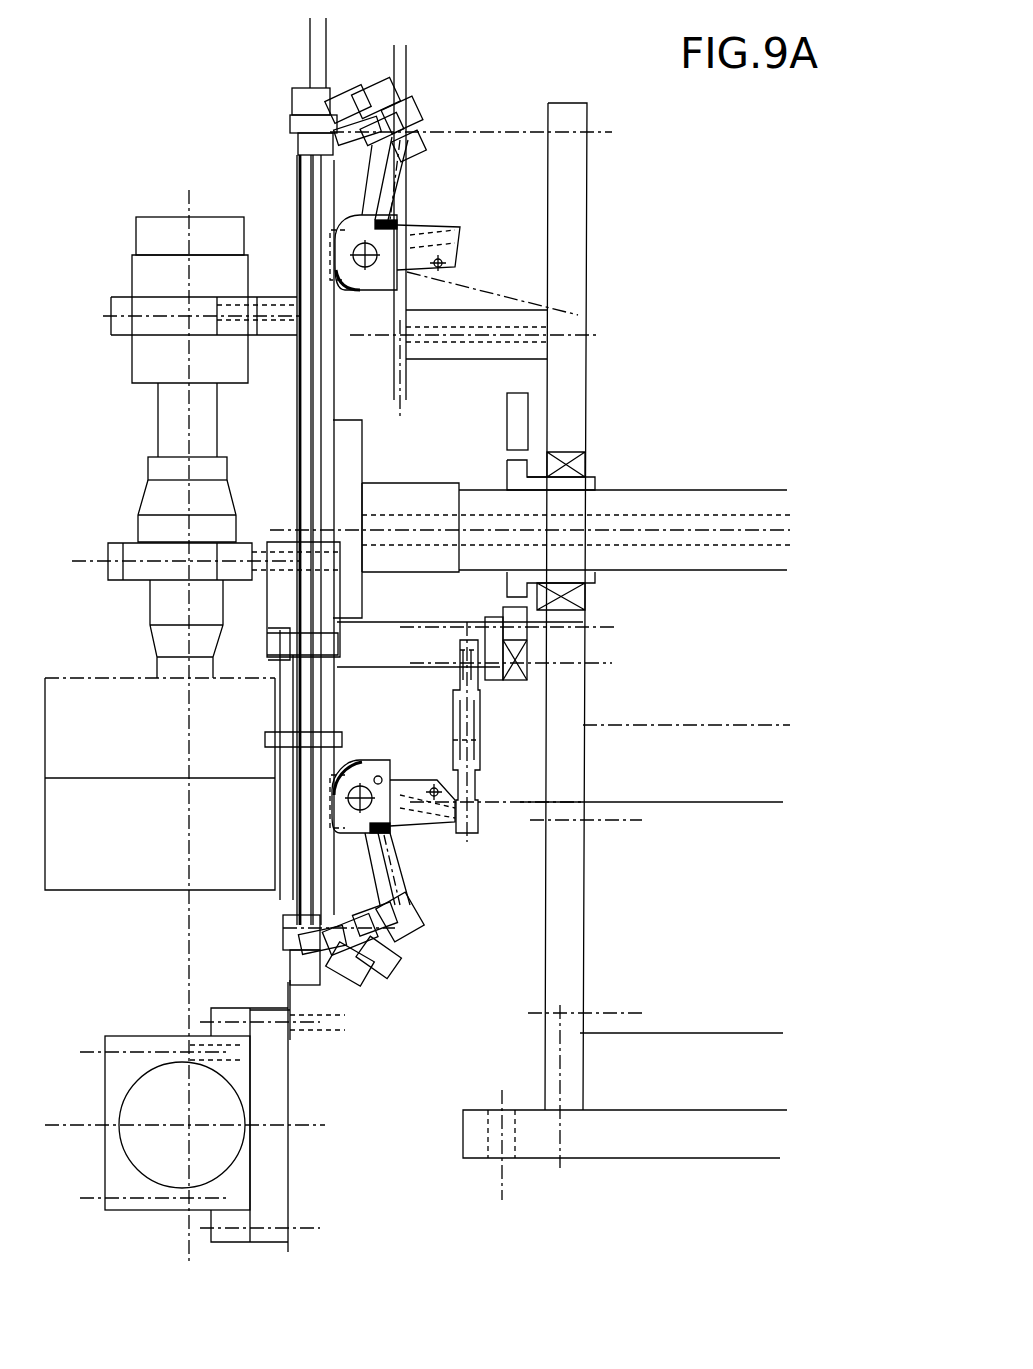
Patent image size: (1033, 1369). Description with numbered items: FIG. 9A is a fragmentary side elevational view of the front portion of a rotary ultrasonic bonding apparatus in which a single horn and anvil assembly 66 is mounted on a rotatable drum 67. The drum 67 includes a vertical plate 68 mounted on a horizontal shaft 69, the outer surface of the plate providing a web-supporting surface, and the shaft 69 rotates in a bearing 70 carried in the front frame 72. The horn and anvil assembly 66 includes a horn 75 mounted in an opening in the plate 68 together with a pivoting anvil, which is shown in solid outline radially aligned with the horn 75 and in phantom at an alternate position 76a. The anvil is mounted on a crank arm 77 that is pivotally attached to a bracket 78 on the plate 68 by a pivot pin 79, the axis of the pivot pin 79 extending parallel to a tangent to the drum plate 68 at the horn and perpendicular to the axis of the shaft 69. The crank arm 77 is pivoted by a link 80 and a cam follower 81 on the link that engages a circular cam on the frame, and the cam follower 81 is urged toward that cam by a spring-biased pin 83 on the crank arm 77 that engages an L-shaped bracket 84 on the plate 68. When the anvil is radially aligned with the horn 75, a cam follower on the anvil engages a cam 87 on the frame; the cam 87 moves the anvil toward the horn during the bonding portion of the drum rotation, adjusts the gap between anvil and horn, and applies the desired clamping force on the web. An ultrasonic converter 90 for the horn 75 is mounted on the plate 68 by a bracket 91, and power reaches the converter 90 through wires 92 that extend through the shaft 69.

The horn and anvil assembly 66 is at (110, 935).
The rotatable drum 67 is at (297, 192).
The vertical plate 68 is at (334, 380).
The horizontal shaft 69 is at (715, 491).
The bearing 70 is at (595, 575).
The front frame 72 is at (583, 972).
The horn 75 is at (70, 678).
The alternate anvil position 76a is at (395, 930).
The crank arm 77 is at (415, 782).
The bracket 78 is at (338, 762).
The pivot pin 79 is at (358, 770).
The link 80 is at (478, 725).
The cam follower 81 is at (545, 678).
The spring-biased pin 83 is at (395, 848).
The L-shaped bracket 84 is at (398, 880).
The cam 87 is at (310, 65).
The ultrasonic converter 90 is at (130, 368).
The bracket 91 is at (125, 337).
The wires 92 is at (250, 345).